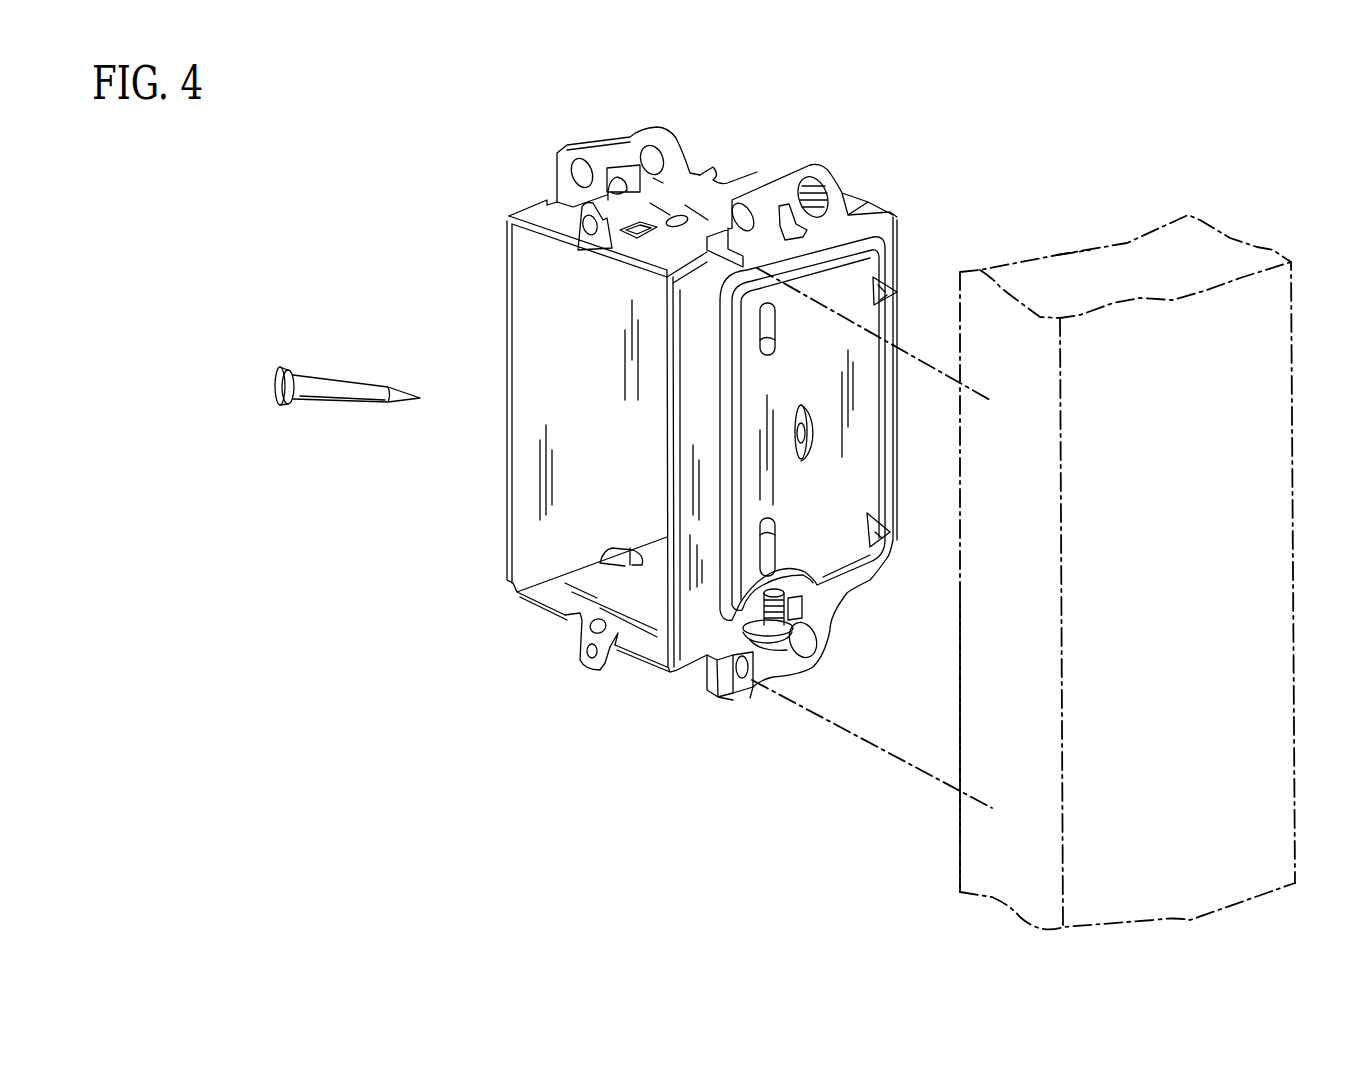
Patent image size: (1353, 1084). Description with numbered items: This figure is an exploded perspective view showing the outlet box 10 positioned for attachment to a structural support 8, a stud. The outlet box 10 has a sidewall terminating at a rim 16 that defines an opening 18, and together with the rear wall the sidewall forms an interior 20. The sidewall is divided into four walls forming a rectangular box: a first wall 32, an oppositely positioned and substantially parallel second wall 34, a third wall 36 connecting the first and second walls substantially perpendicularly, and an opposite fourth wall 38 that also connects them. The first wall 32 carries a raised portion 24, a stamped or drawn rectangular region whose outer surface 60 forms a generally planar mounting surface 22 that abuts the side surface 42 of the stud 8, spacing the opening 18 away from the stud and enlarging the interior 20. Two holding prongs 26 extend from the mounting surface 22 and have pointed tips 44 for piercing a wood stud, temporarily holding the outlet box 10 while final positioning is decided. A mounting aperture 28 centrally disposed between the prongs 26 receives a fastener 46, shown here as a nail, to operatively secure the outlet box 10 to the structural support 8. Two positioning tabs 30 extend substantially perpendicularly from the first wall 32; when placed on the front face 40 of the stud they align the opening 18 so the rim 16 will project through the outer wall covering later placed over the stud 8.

The structural support 8 is at (1200, 350).
The outlet box 10 is at (519, 170).
The rim 16 is at (506, 288).
The opening 18 is at (528, 410).
The interior 20 is at (578, 313).
The mounting surface 22 is at (898, 228).
The raised portion 24 is at (868, 468).
The holding prongs 26 is at (873, 280).
The mounting aperture 28 is at (795, 432).
The positioning tab 30 is at (745, 203).
The first wall 32 is at (743, 303).
The second wall 34 is at (520, 244).
The third wall 36 is at (663, 250).
The fourth wall 38 is at (558, 597).
The front face 40 is at (1005, 855).
The side surface 42 is at (1087, 250).
The pointed tips 44 is at (873, 295).
The fastener 46 is at (278, 365).
The outer surface 60 is at (833, 540).